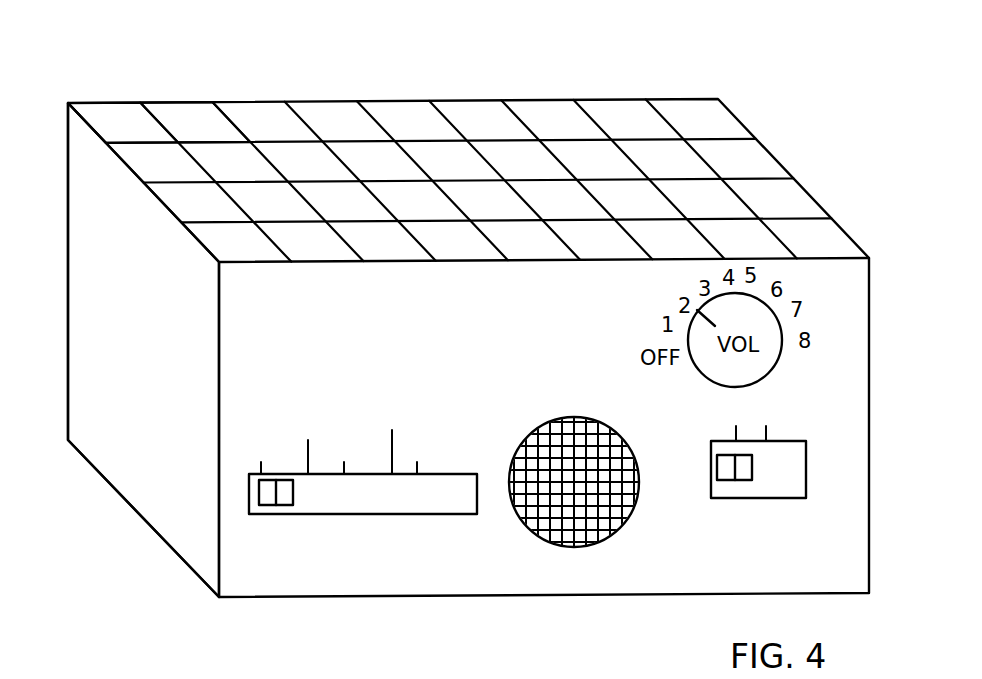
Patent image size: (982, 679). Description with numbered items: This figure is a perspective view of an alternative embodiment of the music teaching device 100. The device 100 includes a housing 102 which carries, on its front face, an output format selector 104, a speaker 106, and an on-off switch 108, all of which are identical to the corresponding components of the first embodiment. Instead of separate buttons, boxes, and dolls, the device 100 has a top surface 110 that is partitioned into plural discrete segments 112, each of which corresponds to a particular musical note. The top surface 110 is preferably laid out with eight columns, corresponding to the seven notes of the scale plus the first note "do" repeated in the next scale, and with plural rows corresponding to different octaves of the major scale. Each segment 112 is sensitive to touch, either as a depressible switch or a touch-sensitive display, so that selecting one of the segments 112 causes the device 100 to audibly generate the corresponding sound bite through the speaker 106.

The music teaching device 100 is at (647, 78).
The housing 102 is at (127, 527).
The output format selector 104 is at (363, 514).
The speaker 106 is at (602, 523).
The on-off switch 108 is at (744, 498).
The top surface 110 is at (440, 210).
The discrete segments 112 is at (252, 120).